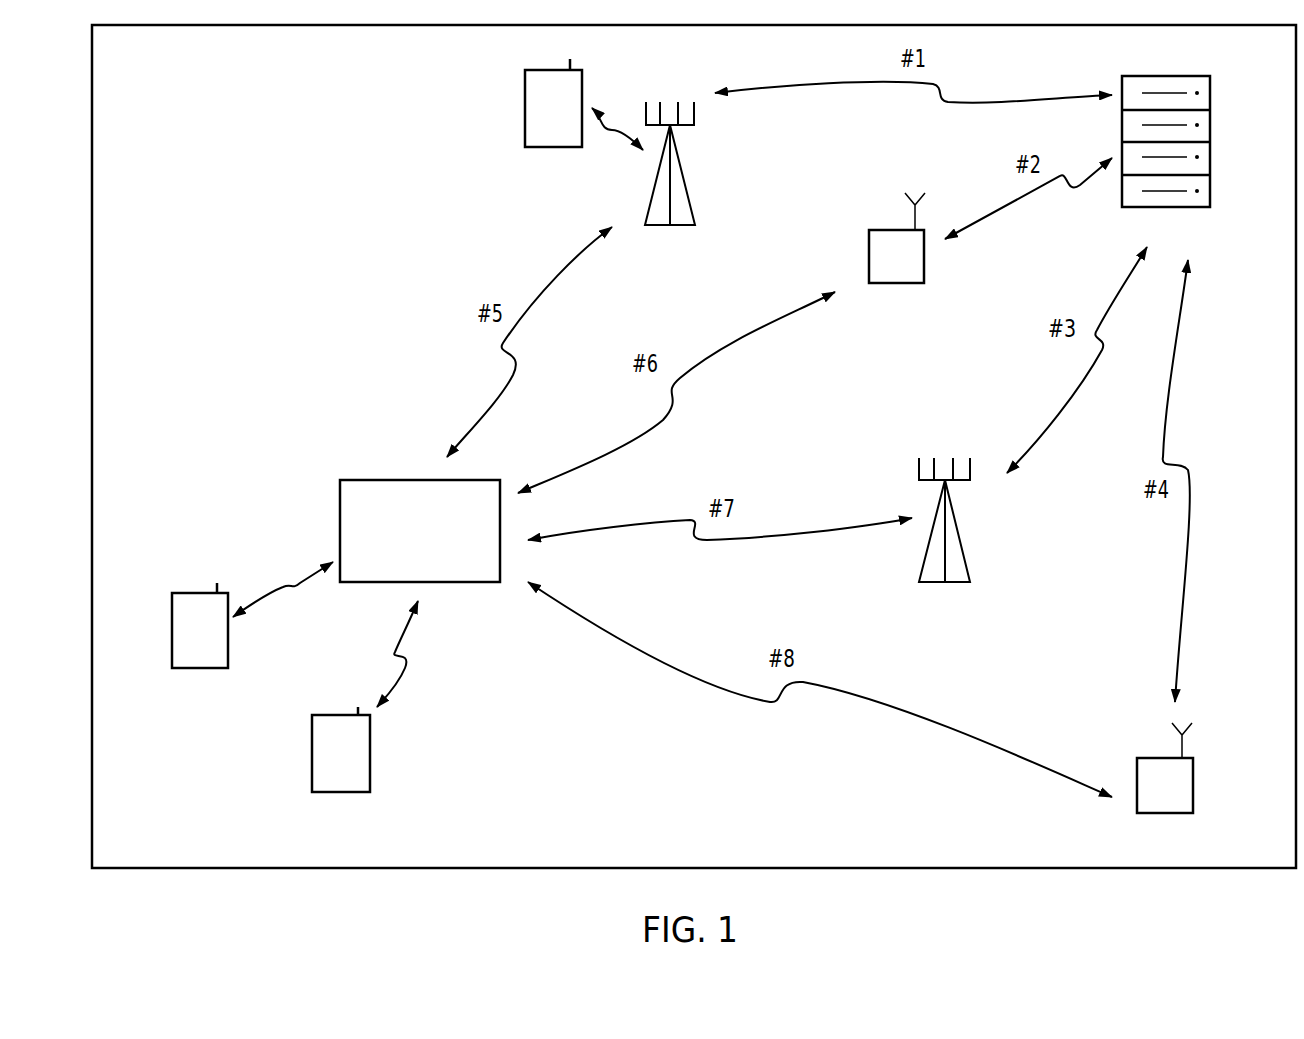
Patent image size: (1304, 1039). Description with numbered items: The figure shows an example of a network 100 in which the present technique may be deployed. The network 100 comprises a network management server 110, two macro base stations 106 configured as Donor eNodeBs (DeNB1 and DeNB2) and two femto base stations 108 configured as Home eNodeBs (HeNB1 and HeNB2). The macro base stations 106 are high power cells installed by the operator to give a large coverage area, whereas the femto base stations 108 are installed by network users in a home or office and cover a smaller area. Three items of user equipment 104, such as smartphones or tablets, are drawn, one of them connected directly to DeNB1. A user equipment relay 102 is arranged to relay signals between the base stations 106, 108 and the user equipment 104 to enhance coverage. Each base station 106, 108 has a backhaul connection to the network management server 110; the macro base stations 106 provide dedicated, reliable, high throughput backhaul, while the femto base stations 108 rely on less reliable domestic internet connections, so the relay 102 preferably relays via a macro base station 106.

The network 100 is at (1280, 908).
The user equipment relay 102 is at (458, 582).
The user equipment 104 is at (525, 108).
The macro base station 106 is at (687, 180).
The femto base station 108 is at (924, 255).
The network management server 110 is at (1210, 127).